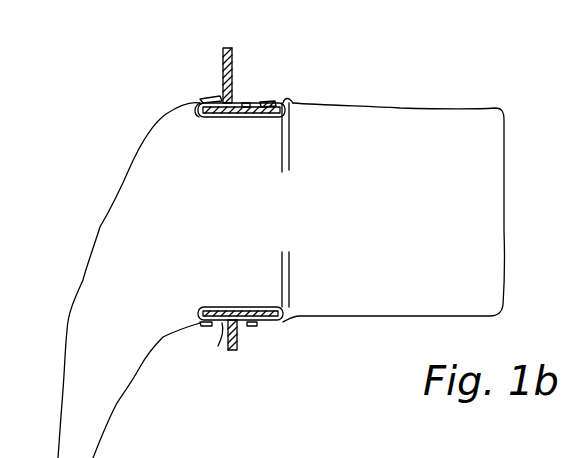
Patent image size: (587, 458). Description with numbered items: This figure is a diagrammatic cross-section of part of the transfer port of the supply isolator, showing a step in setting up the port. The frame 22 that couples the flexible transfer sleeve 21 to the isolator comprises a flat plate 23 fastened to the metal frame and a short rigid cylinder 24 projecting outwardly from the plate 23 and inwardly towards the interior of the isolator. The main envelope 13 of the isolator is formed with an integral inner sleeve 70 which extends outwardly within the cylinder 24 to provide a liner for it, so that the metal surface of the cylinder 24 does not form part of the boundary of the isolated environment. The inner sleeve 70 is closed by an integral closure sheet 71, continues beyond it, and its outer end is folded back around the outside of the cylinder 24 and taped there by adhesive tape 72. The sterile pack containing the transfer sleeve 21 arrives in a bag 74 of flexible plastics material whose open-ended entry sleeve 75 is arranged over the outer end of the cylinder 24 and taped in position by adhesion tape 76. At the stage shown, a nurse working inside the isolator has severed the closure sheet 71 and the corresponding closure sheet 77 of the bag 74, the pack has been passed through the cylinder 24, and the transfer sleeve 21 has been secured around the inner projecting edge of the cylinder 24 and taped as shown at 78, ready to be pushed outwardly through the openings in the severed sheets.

The main envelope 13 is at (222, 84).
The flexible transfer sleeve 21 is at (135, 377).
The frame 22 is at (240, 382).
The flat plate 23 is at (233, 56).
The rigid cylinder 24 is at (239, 323).
The inner sleeve 70 is at (250, 118).
The closure sheet 71 is at (281, 155).
The adhesive tape 72 is at (267, 102).
The bag 74 is at (403, 109).
The entry sleeve 75 is at (285, 99).
The adhesion tape 76 is at (246, 103).
The closure sheet of the bag 77 is at (290, 162).
The tape 78 is at (213, 325).